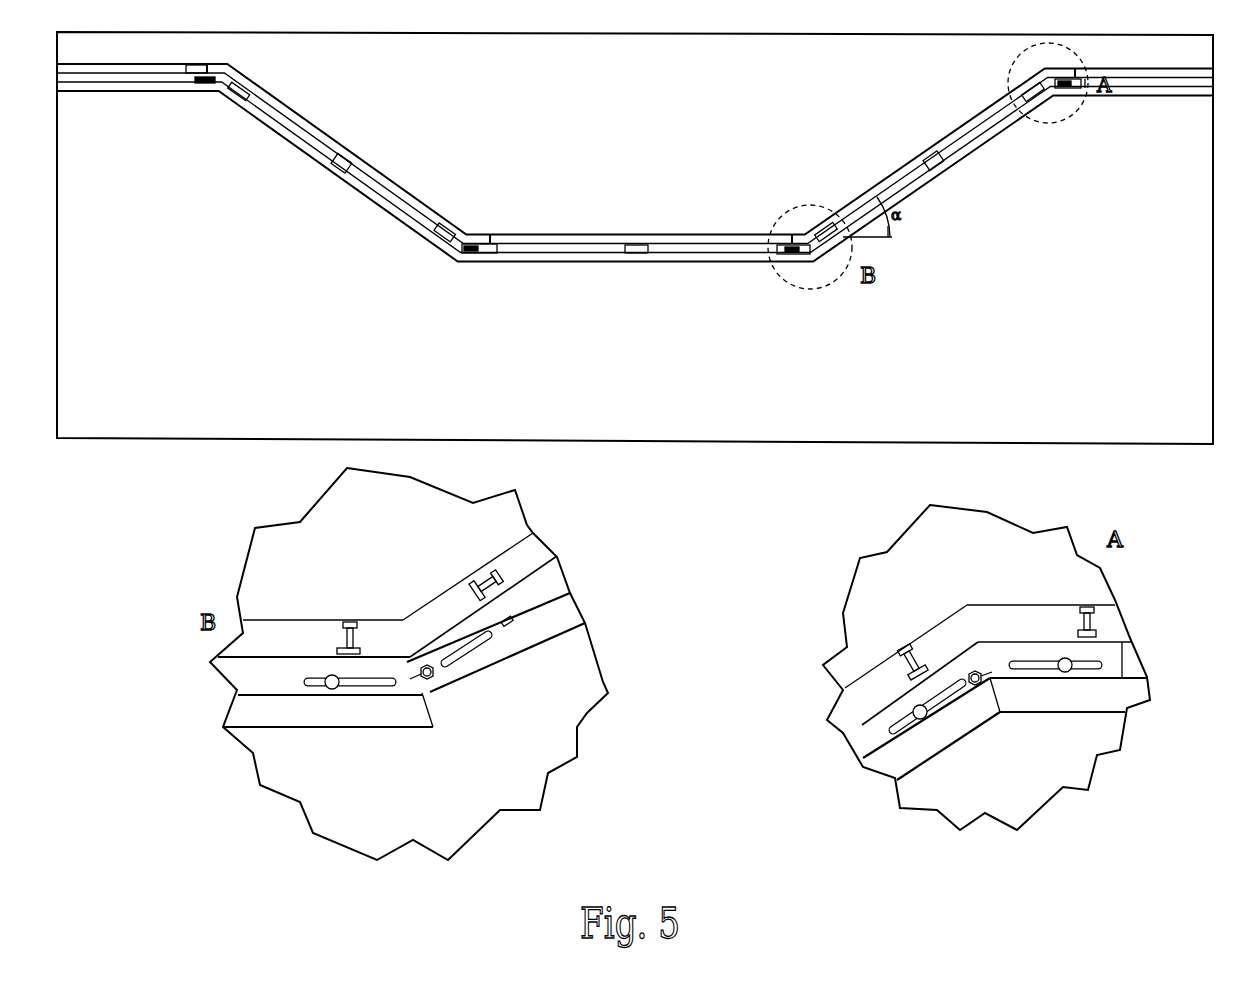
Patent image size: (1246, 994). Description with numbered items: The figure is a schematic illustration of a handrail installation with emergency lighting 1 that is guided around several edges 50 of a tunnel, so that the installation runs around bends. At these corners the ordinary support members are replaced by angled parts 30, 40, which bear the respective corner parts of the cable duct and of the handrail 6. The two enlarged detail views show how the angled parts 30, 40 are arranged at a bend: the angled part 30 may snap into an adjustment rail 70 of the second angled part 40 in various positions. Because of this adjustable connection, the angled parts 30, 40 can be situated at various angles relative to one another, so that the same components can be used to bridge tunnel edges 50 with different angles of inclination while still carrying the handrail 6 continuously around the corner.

The handrail installation with emergency lighting 1 is at (233, 228).
The edge 50 is at (207, 102).
The angled part 30 is at (290, 670).
The second angled part 40 is at (485, 622).
The handrail 6 is at (387, 717).
The adjustment rail 70 is at (417, 675).